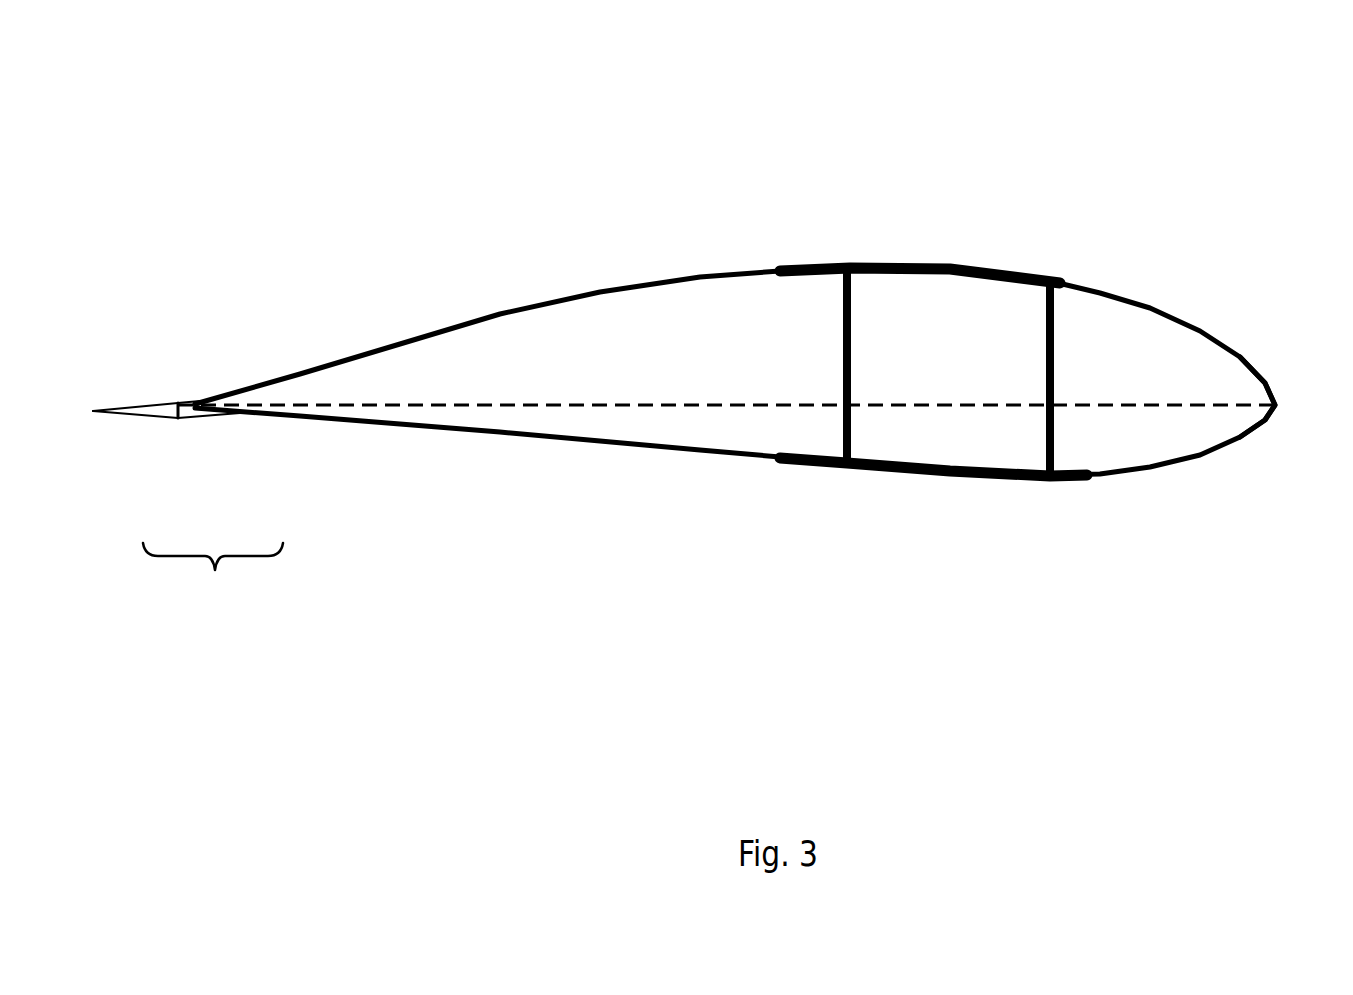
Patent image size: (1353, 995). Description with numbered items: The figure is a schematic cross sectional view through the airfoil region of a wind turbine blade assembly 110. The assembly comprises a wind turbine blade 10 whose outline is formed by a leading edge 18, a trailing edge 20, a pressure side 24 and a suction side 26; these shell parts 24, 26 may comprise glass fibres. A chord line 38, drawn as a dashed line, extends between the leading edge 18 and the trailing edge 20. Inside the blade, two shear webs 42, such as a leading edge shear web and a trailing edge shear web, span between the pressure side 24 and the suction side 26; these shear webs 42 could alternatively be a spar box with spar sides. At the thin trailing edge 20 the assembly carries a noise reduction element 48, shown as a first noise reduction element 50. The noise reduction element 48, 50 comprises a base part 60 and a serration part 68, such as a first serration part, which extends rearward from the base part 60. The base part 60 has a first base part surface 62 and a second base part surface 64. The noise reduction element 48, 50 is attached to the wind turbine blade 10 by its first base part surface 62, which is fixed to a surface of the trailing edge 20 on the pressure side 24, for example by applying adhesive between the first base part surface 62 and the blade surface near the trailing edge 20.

The wind turbine blade assembly 110 is at (597, 102).
The wind turbine blade 10 is at (705, 207).
The leading edge 18 is at (1275, 397).
The trailing edge 20 is at (178, 402).
The pressure side 24 is at (1068, 483).
The suction side 26 is at (1088, 287).
The chord line 38 is at (702, 405).
The shear webs 42 is at (843, 428).
The noise reduction element 48 is at (213, 579).
The first noise reduction element 50 is at (213, 579).
The base part 60 is at (187, 414).
The first base part surface 62 is at (207, 400).
The second base part surface 64 is at (192, 417).
The serration part 68 is at (147, 412).